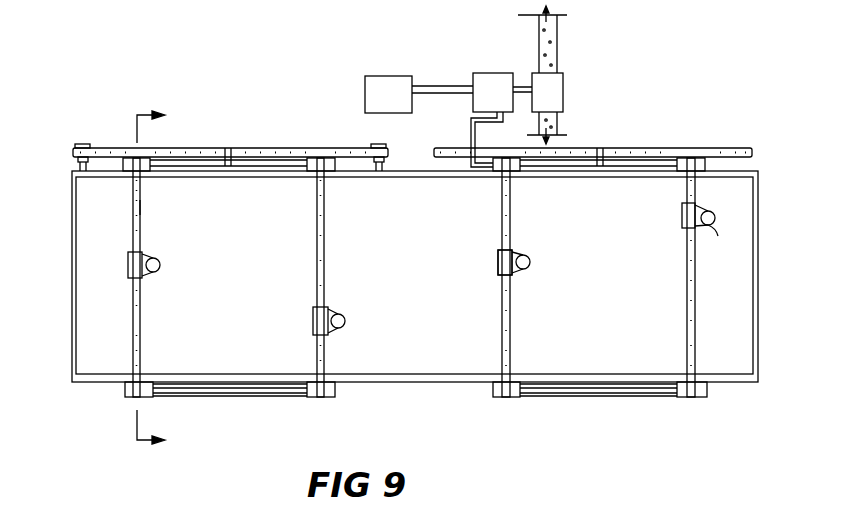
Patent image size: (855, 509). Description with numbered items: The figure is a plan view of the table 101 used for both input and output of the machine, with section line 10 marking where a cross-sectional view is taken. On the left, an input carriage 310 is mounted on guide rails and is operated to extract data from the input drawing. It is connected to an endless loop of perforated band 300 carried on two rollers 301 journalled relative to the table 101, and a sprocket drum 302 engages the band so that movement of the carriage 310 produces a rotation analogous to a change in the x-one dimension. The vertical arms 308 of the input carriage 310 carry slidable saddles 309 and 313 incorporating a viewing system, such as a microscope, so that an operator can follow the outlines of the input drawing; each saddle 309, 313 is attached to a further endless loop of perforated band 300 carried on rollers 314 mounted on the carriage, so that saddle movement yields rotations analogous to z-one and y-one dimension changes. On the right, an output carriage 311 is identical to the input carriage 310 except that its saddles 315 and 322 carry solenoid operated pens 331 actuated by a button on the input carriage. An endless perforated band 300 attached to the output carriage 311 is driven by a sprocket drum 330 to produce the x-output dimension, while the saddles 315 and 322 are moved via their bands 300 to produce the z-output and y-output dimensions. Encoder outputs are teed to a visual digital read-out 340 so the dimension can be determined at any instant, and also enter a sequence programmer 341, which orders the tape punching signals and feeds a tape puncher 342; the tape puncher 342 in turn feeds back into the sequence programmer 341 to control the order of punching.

The section line 10 is at (161, 278).
The table 101 is at (414, 374).
The perforated band 300 is at (122, 148).
The rollers 301 is at (86, 146).
The sprocket drum 302 is at (229, 148).
The vertical arms 308 is at (140, 205).
The saddle 309 is at (144, 260).
The input carriage 310 is at (240, 397).
The output carriage 311 is at (590, 397).
The saddle 313 is at (334, 312).
The rollers 314 is at (123, 171).
The saddle 315 is at (518, 274).
The saddle 322 is at (700, 207).
The sprocket drum 330 is at (601, 148).
The solenoid operated pens 331 is at (530, 258).
The visual digital read-out 340 is at (398, 76).
The sequence programmer 341 is at (490, 73).
The tape puncher 342 is at (563, 80).